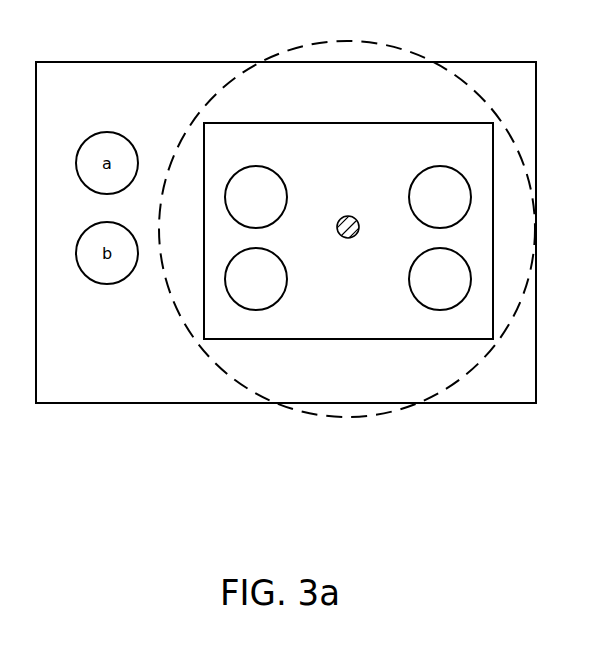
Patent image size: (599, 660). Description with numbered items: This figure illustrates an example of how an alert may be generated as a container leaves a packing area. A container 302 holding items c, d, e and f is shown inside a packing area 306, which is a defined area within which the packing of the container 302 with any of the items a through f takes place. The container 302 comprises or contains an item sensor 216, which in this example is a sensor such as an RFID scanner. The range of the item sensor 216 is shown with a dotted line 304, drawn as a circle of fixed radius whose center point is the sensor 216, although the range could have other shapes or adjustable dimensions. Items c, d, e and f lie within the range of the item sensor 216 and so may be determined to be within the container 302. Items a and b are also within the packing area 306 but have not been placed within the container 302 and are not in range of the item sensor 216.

The packing area 306 is at (166, 62).
The container 302 is at (450, 339).
The dotted line 304 is at (315, 416).
The item sensor 216 is at (351, 238).